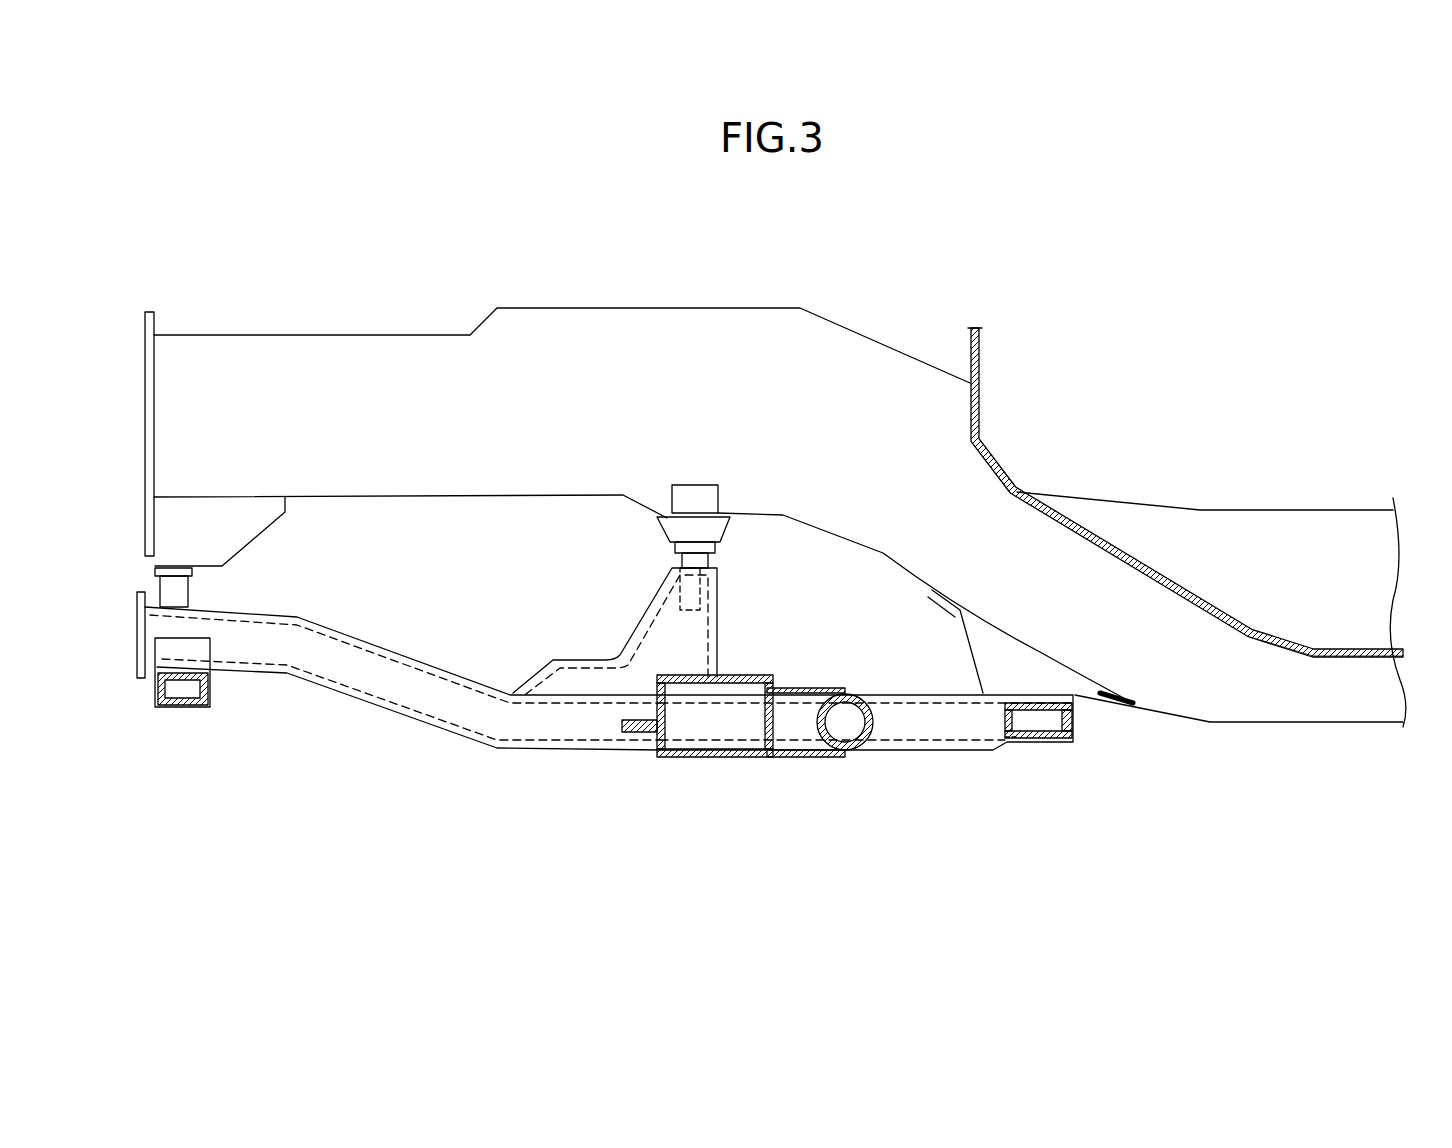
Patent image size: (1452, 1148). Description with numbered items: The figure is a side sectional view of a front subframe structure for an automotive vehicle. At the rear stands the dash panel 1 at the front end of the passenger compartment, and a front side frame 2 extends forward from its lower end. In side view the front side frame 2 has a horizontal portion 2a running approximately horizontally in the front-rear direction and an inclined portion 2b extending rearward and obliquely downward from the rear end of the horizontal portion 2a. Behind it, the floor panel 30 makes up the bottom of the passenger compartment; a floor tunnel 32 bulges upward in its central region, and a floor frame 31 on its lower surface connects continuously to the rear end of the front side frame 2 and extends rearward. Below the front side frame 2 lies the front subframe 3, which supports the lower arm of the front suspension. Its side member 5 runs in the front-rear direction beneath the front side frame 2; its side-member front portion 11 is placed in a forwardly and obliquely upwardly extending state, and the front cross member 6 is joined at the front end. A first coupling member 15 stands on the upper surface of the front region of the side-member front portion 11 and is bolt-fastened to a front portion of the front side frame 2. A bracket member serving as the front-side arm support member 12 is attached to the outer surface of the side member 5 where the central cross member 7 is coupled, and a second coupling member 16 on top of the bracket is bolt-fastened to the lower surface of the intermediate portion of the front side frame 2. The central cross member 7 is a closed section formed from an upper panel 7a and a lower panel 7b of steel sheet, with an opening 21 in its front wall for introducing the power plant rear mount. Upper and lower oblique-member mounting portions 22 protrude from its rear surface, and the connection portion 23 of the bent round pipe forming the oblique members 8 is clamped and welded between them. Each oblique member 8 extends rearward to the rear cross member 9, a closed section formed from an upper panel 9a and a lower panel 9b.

The dash panel 1 is at (980, 358).
The front side frame 2 is at (639, 465).
The horizontal portion 2a is at (352, 355).
The inclined portion 2b is at (855, 532).
The front subframe 3 is at (737, 815).
The side member 5 is at (605, 706).
The front cross member 6 is at (175, 710).
The central cross member 7 is at (718, 728).
The upper panel 7a is at (730, 677).
The lower panel 7b is at (738, 757).
The oblique member 8 is at (935, 753).
The rear cross member 9 is at (1065, 726).
The upper panel 9a is at (1040, 703).
The lower panel 9b is at (1050, 742).
The side-member front portion 11 is at (420, 655).
The front-side arm support member 12 is at (597, 660).
The first coupling member 15 is at (190, 580).
The second coupling member 16 is at (680, 585).
The opening 21 is at (647, 700).
The oblique-member mounting portion 22 is at (815, 690).
The connection portion 23 is at (870, 703).
The floor panel 30 is at (1360, 650).
The floor frame 31 is at (1303, 722).
The floor tunnel 32 is at (1283, 508).